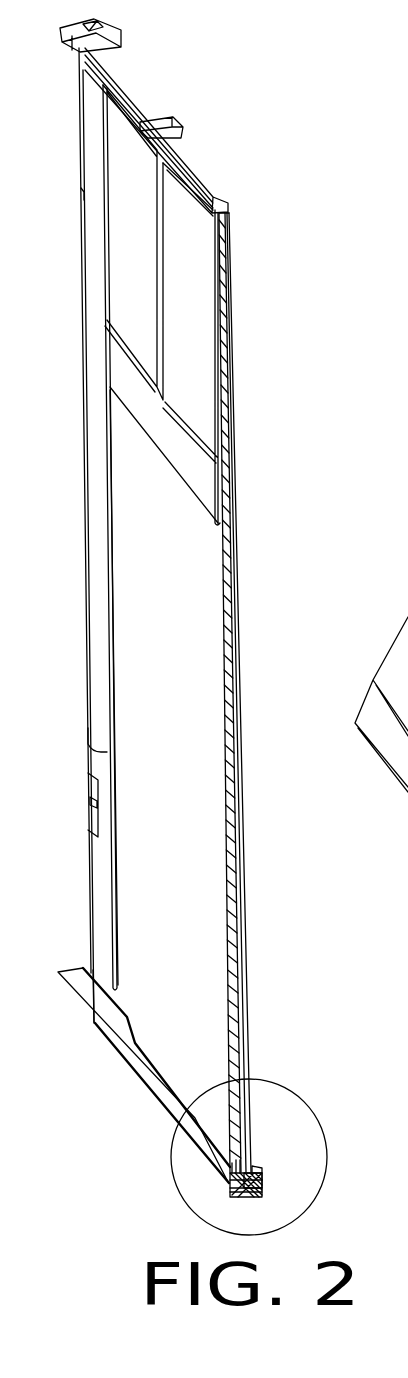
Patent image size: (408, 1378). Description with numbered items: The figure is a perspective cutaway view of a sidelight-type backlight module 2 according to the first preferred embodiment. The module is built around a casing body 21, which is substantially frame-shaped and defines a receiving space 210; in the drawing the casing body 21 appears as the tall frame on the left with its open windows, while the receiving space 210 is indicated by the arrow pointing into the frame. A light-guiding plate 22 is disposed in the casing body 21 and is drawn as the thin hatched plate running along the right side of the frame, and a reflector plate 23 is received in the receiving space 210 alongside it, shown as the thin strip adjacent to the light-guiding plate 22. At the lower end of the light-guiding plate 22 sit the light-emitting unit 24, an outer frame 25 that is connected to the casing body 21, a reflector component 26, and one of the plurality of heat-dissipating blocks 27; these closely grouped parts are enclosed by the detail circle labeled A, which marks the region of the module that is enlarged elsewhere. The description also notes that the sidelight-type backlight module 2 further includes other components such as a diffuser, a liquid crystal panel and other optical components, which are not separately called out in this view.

The sidelight-type backlight module 2 is at (284, 279).
The casing body 21 is at (88, 558).
The receiving space 210 is at (127, 623).
The light-guiding plate 22 is at (233, 788).
The reflector plate 23 is at (200, 562).
The light-emitting unit 24 is at (240, 1172).
The outer frame 25 is at (262, 1196).
The reflector component 26 is at (263, 1183).
The heat-dissipating blocks 27 is at (233, 1197).
The enlarged detail region A is at (318, 1119).